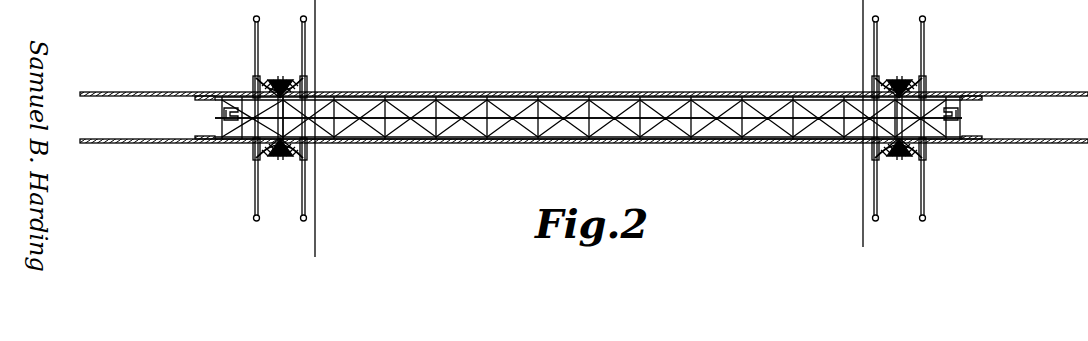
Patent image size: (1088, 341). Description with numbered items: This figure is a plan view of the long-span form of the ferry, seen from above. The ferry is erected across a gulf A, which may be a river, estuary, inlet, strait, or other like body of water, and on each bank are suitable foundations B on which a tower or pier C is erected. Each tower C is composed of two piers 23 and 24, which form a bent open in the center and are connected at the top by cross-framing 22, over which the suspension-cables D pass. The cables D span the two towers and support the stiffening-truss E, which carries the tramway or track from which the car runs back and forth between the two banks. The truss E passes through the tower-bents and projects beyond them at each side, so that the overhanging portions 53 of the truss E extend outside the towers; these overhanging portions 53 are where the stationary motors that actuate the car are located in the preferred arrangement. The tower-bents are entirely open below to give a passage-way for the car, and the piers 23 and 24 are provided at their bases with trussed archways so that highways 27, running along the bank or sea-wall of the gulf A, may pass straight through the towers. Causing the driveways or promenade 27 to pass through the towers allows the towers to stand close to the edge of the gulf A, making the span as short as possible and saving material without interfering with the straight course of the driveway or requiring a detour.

The gulf A is at (588, 69).
The foundations B is at (318, 11).
The tower or pier C is at (586, 118).
The suspension-cables D is at (133, 141).
The stiffening-truss E is at (669, 142).
The cross-framing 22 is at (240, 136).
The pier 23 is at (256, 82).
The pier 24 is at (258, 153).
The highways 27 is at (288, 194).
The overhanging portions 53 is at (221, 101).